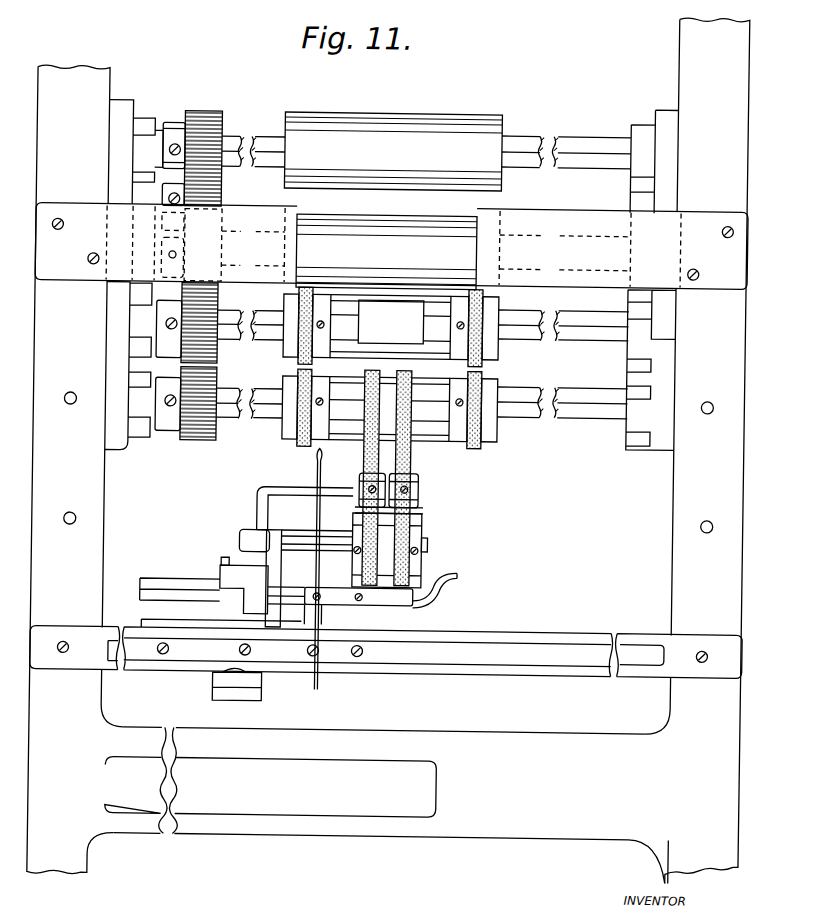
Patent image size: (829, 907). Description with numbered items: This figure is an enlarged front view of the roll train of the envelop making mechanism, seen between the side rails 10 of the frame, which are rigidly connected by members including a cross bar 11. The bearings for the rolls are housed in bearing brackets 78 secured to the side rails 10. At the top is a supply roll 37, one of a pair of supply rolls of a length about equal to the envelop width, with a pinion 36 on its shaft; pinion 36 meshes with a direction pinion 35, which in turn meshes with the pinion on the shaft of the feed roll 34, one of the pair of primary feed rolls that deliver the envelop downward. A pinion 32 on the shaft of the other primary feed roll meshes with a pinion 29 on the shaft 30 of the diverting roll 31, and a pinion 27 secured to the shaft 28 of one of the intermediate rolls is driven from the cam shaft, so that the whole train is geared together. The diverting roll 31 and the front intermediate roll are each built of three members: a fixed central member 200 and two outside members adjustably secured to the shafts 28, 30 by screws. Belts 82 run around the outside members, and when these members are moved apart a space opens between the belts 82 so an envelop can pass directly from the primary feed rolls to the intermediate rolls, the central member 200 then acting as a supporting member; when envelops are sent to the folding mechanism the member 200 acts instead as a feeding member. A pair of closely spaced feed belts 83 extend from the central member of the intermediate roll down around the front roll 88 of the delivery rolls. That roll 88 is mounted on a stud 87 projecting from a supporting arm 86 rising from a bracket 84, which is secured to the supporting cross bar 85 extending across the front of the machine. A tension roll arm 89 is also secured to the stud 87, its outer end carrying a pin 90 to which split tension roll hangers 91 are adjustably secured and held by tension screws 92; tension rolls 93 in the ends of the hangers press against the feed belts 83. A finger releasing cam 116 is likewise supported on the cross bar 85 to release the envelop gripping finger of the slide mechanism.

The side rails 10 is at (692, 59).
The cross bar 11 is at (364, 822).
The pinion 27 is at (188, 432).
The shaft 28 is at (601, 410).
The pinion 29 is at (188, 313).
The shaft 30 is at (600, 333).
The diverting roll 31 is at (360, 296).
The pinion 32 is at (165, 238).
The feed roll 34 is at (426, 212).
The direction pinion 35 is at (226, 192).
The pinion 36 is at (215, 108).
The supply roll 37 is at (428, 112).
The bearing brackets 78 is at (135, 108).
The belts 82 is at (484, 372).
The feed belts 83 is at (418, 443).
The bracket 84 is at (206, 619).
The supporting cross bar 85 is at (724, 670).
The supporting arm 86 is at (252, 547).
The stud 87 is at (270, 543).
The front roll 88 is at (422, 529).
The tension roll arm 89 is at (356, 548).
The pin 90 is at (323, 484).
The tension roll hangers 91 is at (366, 477).
The tension screws 92 is at (427, 485).
The tension rolls 93 is at (428, 503).
The finger releasing cam 116 is at (463, 574).
The central member 200 is at (386, 295).